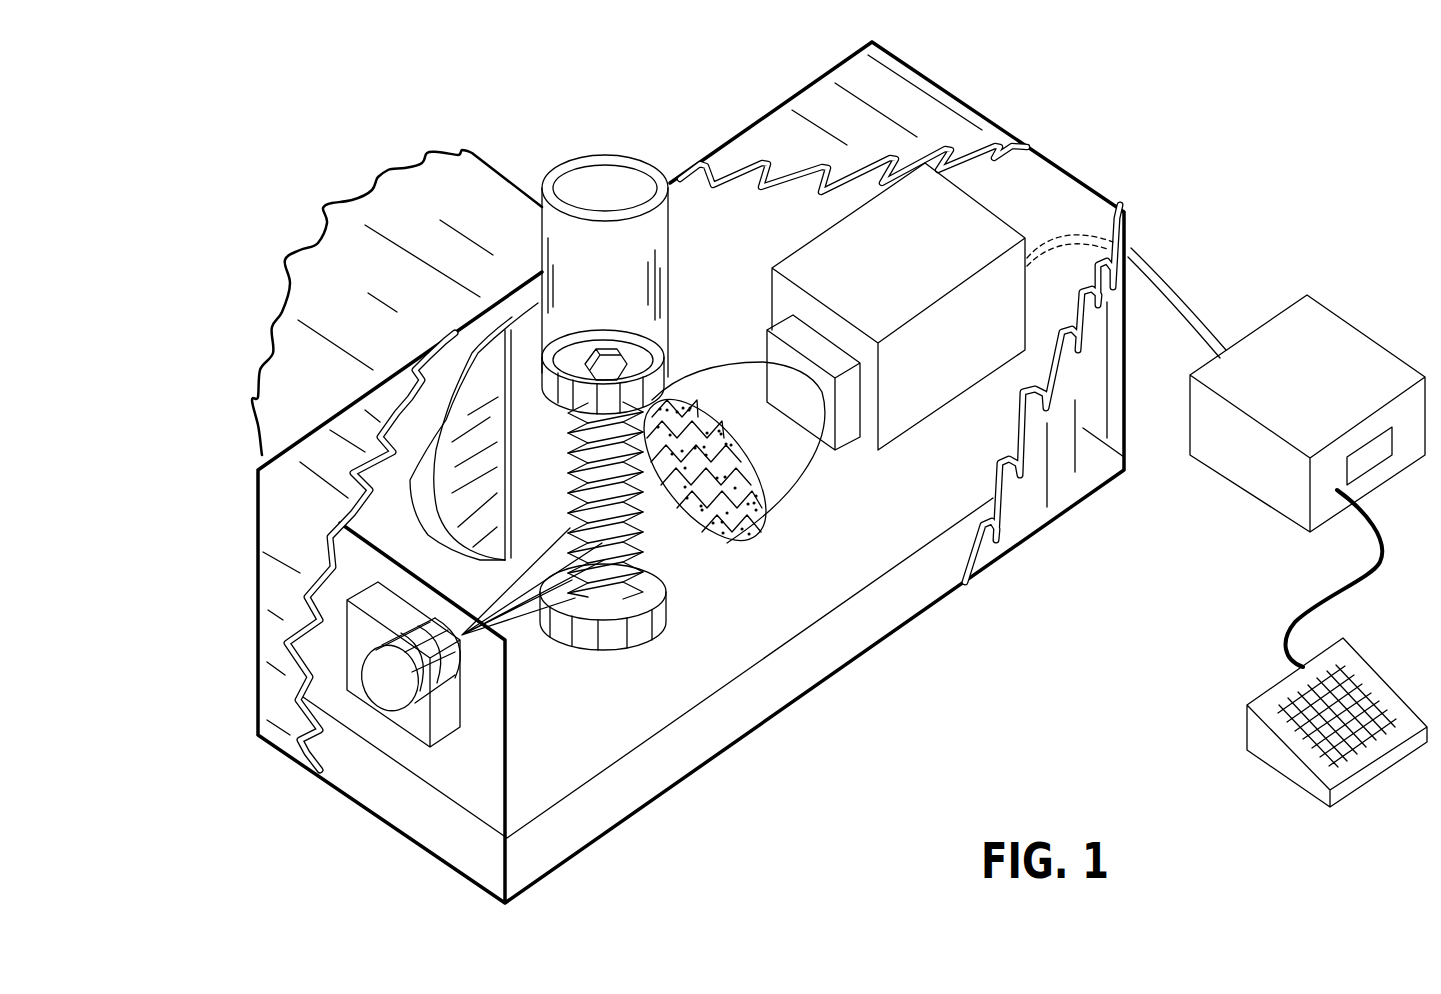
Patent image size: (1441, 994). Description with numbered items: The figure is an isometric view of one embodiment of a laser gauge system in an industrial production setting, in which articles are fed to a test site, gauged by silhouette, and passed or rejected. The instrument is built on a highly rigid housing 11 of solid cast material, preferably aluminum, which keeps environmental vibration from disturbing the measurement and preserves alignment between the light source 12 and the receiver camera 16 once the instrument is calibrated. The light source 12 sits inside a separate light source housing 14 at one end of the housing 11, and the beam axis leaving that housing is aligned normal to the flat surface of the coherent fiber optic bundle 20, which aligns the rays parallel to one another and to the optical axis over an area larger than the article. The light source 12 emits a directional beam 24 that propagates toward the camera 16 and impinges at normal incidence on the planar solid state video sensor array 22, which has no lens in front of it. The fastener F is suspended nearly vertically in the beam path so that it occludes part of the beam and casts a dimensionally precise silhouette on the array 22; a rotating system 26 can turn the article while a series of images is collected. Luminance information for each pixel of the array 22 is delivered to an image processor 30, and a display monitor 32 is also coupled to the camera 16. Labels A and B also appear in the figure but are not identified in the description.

The housing 11 is at (1124, 457).
The light source 12 is at (387, 683).
The light source housing 14 is at (447, 702).
The receiver camera 16 is at (933, 363).
The coherent fiber optic bundle 20 is at (777, 477).
The video sensor array 22 is at (848, 418).
The directional beam 24 is at (1293, 330).
The rotating system 26 is at (647, 630).
The image processor 30 is at (1363, 335).
The display monitor 32 is at (1253, 723).
The sample tube A is at (605, 185).
The specimen B is at (300, 280).
The fastener F is at (668, 582).